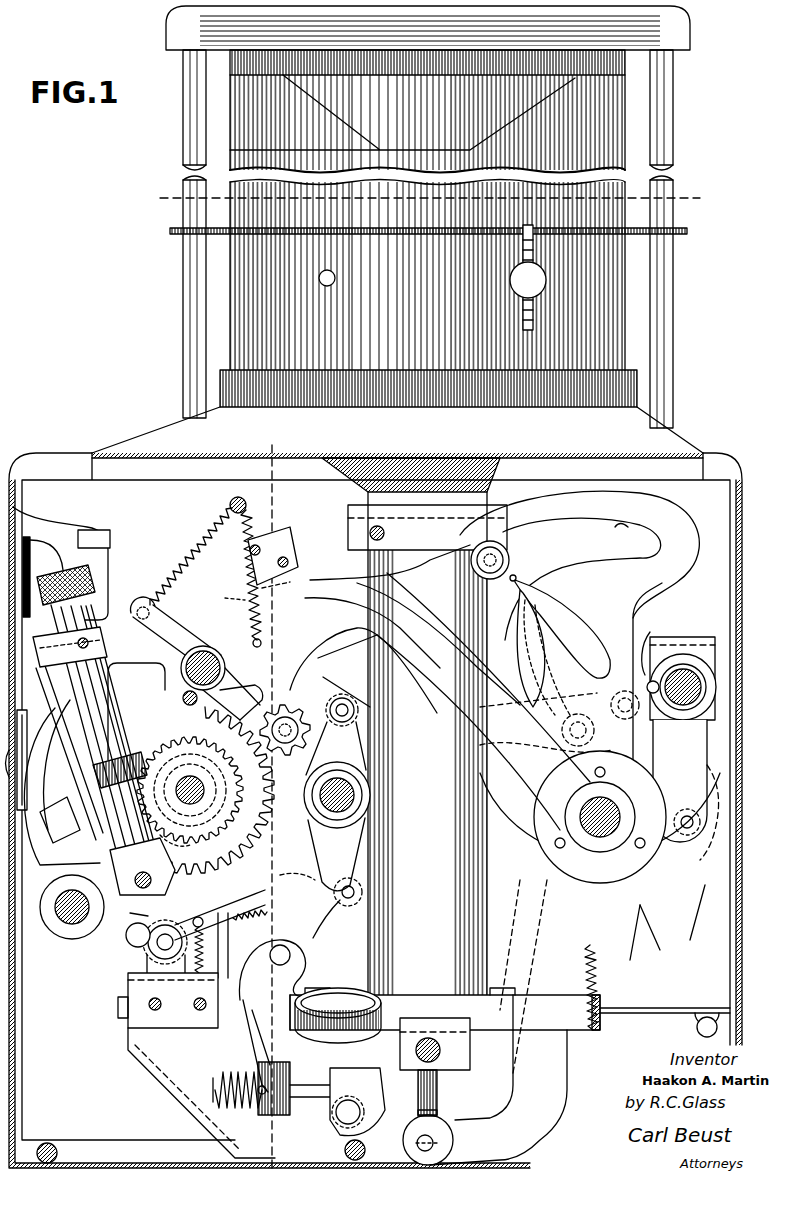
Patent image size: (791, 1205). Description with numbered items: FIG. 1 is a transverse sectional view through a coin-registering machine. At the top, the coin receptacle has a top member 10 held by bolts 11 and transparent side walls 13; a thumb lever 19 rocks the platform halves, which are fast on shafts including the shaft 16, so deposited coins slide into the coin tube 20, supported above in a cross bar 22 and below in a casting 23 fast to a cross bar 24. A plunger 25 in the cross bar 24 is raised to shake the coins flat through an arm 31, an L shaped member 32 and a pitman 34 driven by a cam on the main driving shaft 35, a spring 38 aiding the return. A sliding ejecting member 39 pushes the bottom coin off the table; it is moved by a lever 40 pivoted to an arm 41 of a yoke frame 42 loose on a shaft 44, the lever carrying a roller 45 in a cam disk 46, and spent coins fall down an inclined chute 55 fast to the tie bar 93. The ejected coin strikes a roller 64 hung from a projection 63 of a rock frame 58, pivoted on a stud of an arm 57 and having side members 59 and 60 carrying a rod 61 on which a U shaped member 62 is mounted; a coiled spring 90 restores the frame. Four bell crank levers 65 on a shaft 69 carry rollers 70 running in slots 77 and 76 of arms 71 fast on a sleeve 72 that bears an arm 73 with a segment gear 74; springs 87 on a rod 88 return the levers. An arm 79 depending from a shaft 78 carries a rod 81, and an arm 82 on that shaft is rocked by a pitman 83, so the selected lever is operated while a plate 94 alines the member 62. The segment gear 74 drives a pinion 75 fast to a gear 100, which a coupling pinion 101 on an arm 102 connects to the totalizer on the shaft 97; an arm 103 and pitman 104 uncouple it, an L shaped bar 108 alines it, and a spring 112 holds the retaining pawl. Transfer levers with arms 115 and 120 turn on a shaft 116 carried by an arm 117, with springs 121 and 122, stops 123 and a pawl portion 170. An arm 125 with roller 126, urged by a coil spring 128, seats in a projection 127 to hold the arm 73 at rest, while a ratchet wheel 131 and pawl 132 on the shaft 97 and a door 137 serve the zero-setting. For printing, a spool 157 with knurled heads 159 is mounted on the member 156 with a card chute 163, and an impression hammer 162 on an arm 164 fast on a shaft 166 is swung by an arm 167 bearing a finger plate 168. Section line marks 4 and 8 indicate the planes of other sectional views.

The section line 4- 4 is at (287, 437).
The section line 8- 8 is at (428, 198).
The top member 10 is at (428, 34).
The bolts 11 is at (186, 112).
The side walls 13 is at (605, 130).
The shaft 16 is at (334, 274).
The thumb lever 19 is at (512, 280).
The coin tube 20 is at (460, 948).
The cross bar 22 is at (412, 504).
The casting 23 is at (478, 987).
The cross bar 24 is at (462, 1066).
The plunger 25 is at (440, 1103).
The arm 31 is at (344, 1148).
The L shaped member 32 is at (455, 1140).
The pitman 34 is at (538, 1112).
The main driving shaft 35 is at (612, 832).
The spring 38 is at (598, 978).
The sliding ejecting member 39 is at (648, 1013).
The lever 40 is at (692, 932).
The arm 41 is at (651, 655).
The yoke frame 42 is at (683, 641).
The shaft 44 is at (700, 680).
The roller 45 is at (715, 808).
The cam disk 46 is at (644, 948).
The inclined chute 55 is at (170, 1082).
The arm 57 is at (350, 1100).
The rock frame 58 is at (290, 1068).
The side member 59 is at (253, 1012).
The side member 60 is at (244, 1052).
The rod 61 is at (272, 958).
The U shaped member 62 is at (313, 938).
The projection 63 is at (315, 992).
The roller 64 is at (338, 1020).
The bell crank levers 65 is at (372, 580).
The shaft 69 is at (200, 645).
The rollers 70 is at (505, 553).
The arms 71 is at (625, 610).
The sleeve 72 is at (565, 858).
The arm 73 is at (440, 672).
The segment gear 74 is at (241, 702).
The pinion 75 is at (206, 790).
The slots 76 is at (620, 526).
The slots 77 is at (518, 577).
The shaft 78 is at (337, 806).
The arm 79 is at (360, 832).
The rod 81 is at (334, 890).
The arm 82 is at (347, 671).
The pitman 83 is at (348, 704).
The springs 87 is at (250, 530).
The rod 88 is at (225, 499).
The coiled spring 90 is at (244, 1108).
The tie bar 93 is at (175, 1015).
The plate 94 is at (228, 948).
The shaft 97 is at (190, 790).
The gear 100 is at (135, 718).
The broad pinion 101 is at (285, 760).
The arm 102 is at (255, 645).
The arm 103 is at (225, 598).
The pitman 104 is at (362, 640).
The L shaped bar 108 is at (300, 585).
The spring 112 is at (184, 560).
The arm 115 is at (130, 932).
The shaft 116 is at (157, 945).
The arm 117 is at (147, 962).
The arm 120 is at (297, 868).
The springs 121 is at (265, 913).
The springs 122 is at (177, 994).
The overthrow preventing arms 123 is at (126, 913).
The arm 125 is at (700, 762).
The roller 126 is at (688, 830).
The projection 127 is at (630, 885).
The coil spring 128 is at (705, 690).
The ratchet wheel 131 is at (182, 847).
The spring pressed pawl 132 is at (192, 708).
The door 137 is at (88, 556).
The member 156 is at (95, 870).
The spool 157 is at (112, 680).
The knurled heads 159 is at (64, 568).
The impression hammer 162 is at (50, 805).
The chute 163 is at (28, 740).
The arm 164 is at (62, 912).
The shaft 166 is at (55, 928).
The arm 167 is at (35, 678).
The finger plate 168 is at (30, 540).
The portion 170 is at (230, 937).